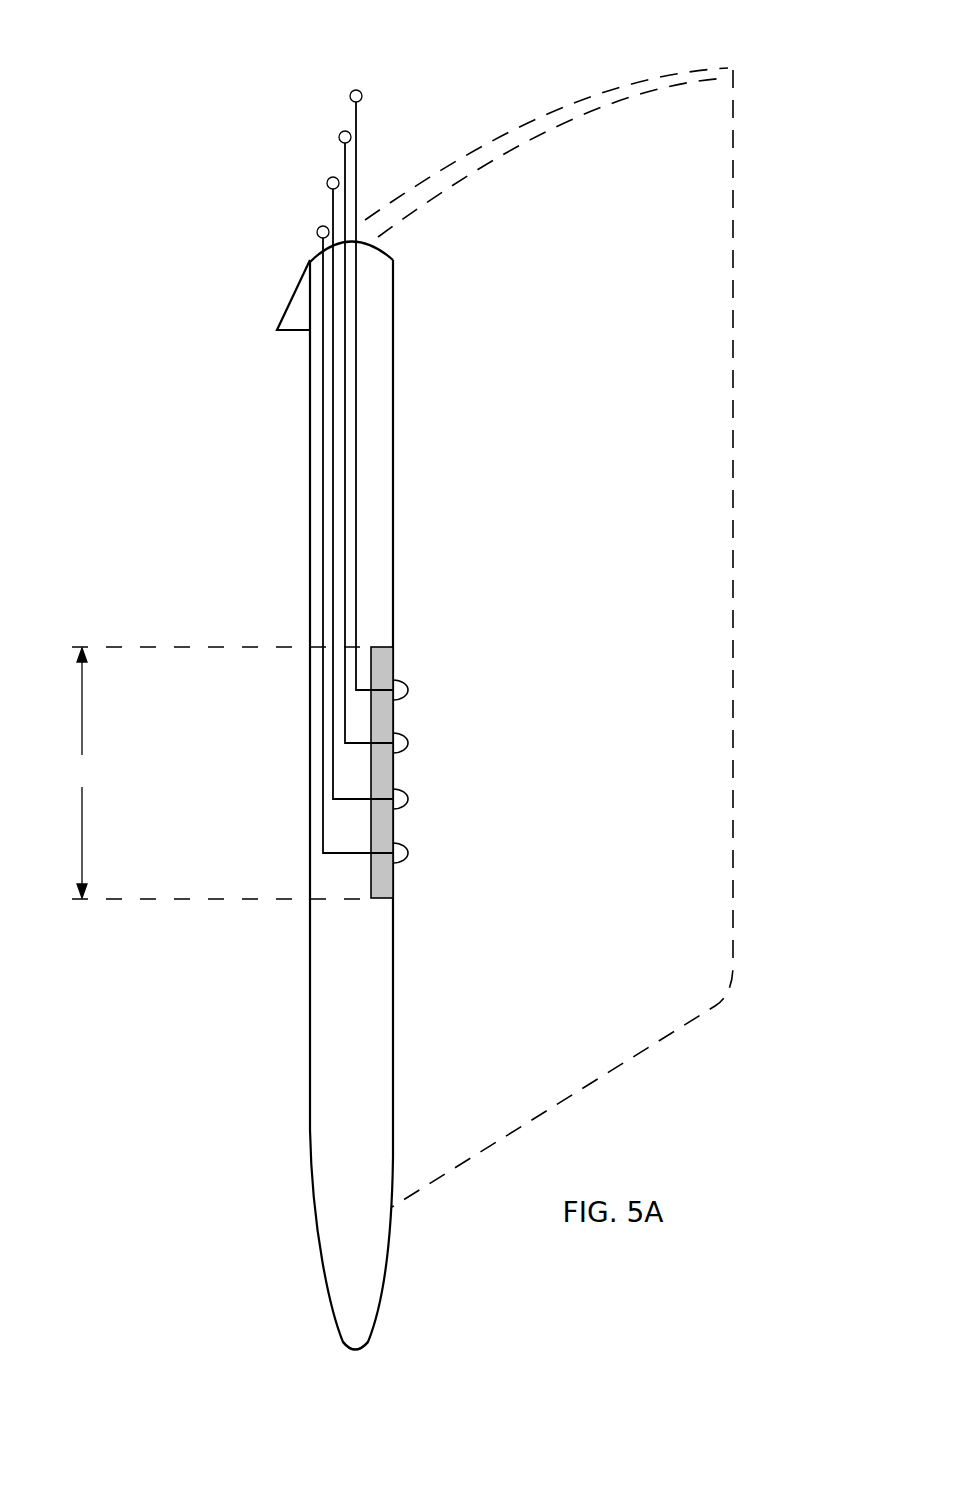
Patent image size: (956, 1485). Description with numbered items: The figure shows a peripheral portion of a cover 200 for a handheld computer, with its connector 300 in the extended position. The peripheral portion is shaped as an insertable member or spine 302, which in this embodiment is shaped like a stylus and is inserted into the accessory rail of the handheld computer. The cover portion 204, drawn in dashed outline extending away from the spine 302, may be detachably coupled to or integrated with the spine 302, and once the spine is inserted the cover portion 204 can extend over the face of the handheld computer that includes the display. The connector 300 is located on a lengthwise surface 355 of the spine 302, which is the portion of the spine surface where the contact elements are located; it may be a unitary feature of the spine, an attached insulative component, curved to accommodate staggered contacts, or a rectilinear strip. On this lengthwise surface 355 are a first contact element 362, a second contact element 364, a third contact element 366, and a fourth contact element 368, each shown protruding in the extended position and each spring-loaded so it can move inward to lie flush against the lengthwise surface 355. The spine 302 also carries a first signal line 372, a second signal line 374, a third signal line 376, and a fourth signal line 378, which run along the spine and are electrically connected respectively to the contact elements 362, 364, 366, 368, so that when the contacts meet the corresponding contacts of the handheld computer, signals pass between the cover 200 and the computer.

The cover 200 is at (283, 958).
The cover portion 204 is at (537, 128).
The connector 300 is at (402, 776).
The spine 302 is at (368, 1219).
The lengthwise surface 355 is at (215, 773).
The first contact element 362 is at (408, 692).
The second contact element 364 is at (408, 748).
The third contact element 366 is at (410, 802).
The fourth contact element 368 is at (410, 856).
The first signal line 372 is at (350, 96).
The second signal line 374 is at (339, 137).
The third signal line 376 is at (327, 183).
The fourth signal line 378 is at (317, 232).